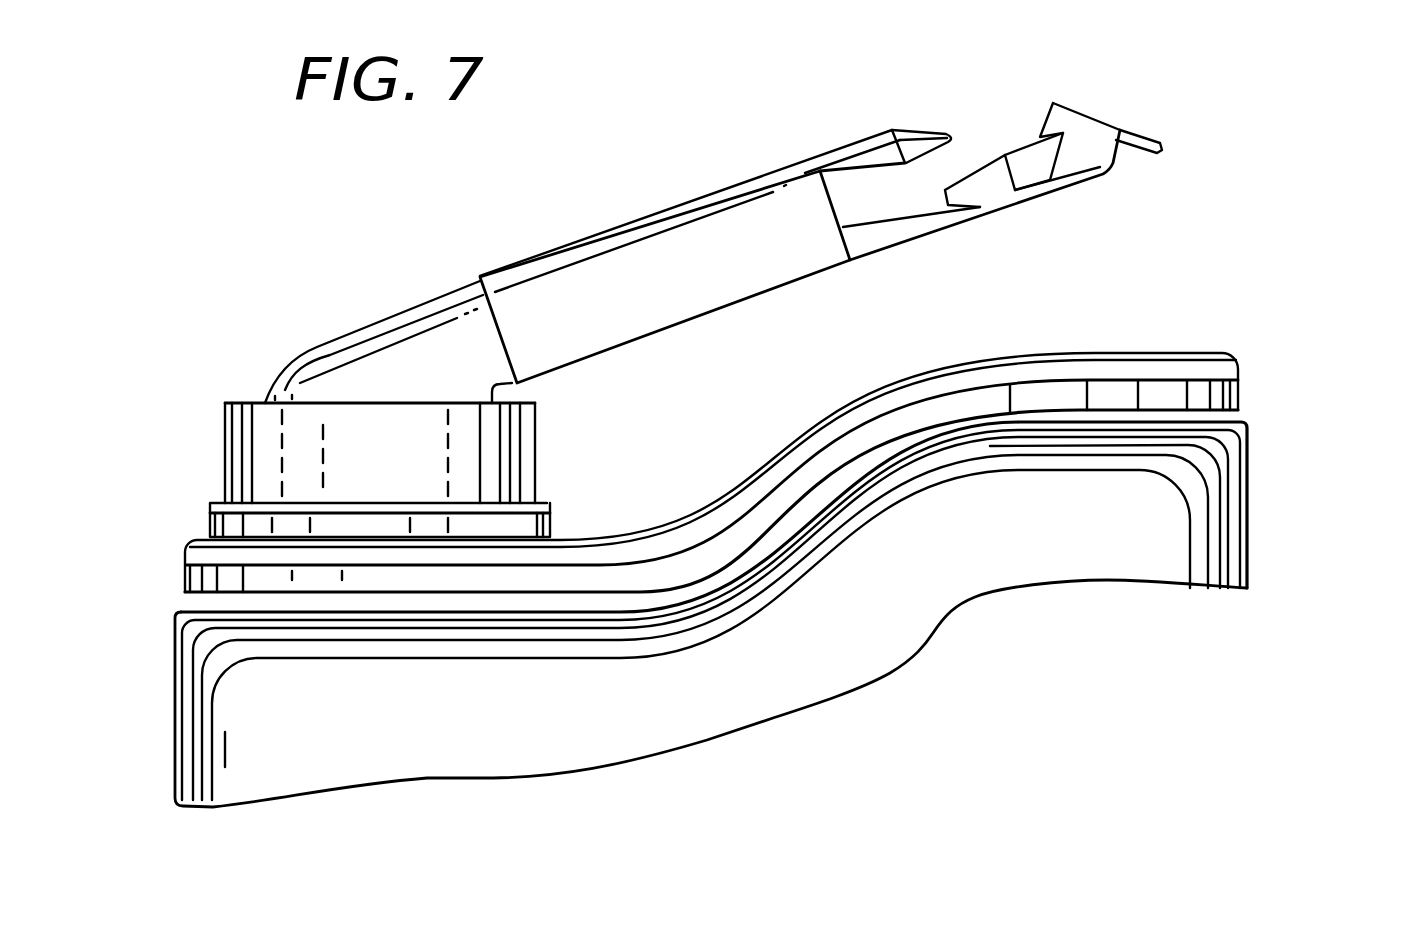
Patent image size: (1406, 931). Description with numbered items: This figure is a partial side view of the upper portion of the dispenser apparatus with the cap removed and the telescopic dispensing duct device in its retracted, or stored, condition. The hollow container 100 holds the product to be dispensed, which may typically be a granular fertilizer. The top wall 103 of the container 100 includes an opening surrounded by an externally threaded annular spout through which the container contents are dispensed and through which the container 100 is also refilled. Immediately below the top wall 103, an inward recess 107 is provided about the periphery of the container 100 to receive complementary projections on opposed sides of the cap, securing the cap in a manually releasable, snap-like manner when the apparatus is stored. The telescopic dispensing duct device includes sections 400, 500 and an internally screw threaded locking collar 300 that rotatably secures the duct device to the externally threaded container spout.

The hollow container 100 is at (1264, 558).
The top wall 103 is at (1132, 353).
The inward recess 107 is at (1240, 418).
The locking collar 300 is at (225, 462).
The duct device section 400 is at (325, 342).
The duct device section 500 is at (733, 186).